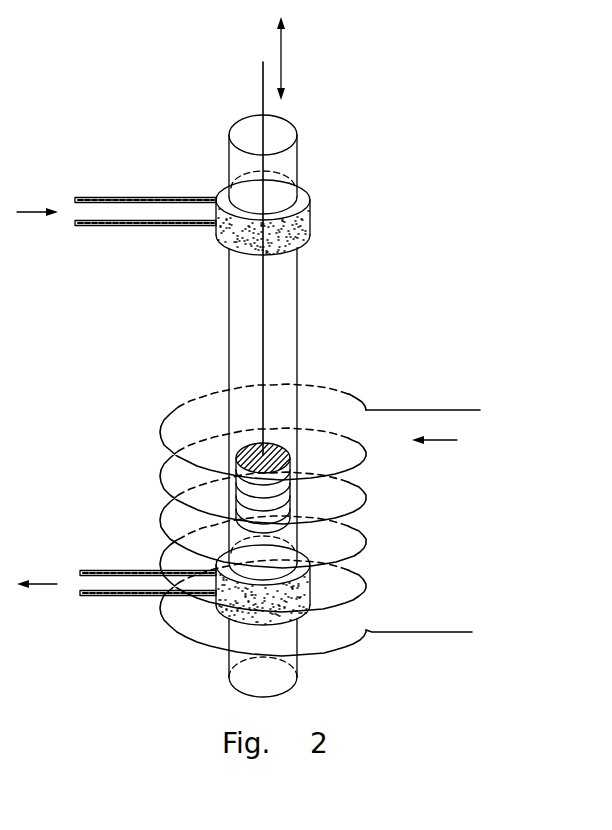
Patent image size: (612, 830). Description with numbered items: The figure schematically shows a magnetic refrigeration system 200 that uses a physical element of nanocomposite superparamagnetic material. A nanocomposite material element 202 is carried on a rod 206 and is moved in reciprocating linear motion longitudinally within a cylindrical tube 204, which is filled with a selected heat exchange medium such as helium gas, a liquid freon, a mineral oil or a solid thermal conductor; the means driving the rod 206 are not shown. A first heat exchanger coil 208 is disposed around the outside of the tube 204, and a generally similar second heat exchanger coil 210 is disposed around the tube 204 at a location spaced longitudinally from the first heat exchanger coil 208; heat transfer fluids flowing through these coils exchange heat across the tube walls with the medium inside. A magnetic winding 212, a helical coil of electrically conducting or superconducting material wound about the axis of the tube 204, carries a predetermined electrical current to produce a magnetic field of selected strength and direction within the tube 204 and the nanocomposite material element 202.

The magnetic refrigeration system 200 is at (130, 79).
The nanocomposite material element 202 is at (297, 452).
The cylindrical tube 204 is at (298, 295).
The rod 206 is at (263, 86).
The first heat exchanger coil 208 is at (215, 188).
The second heat exchanger coil 210 is at (312, 587).
The magnetic winding 212 is at (401, 410).